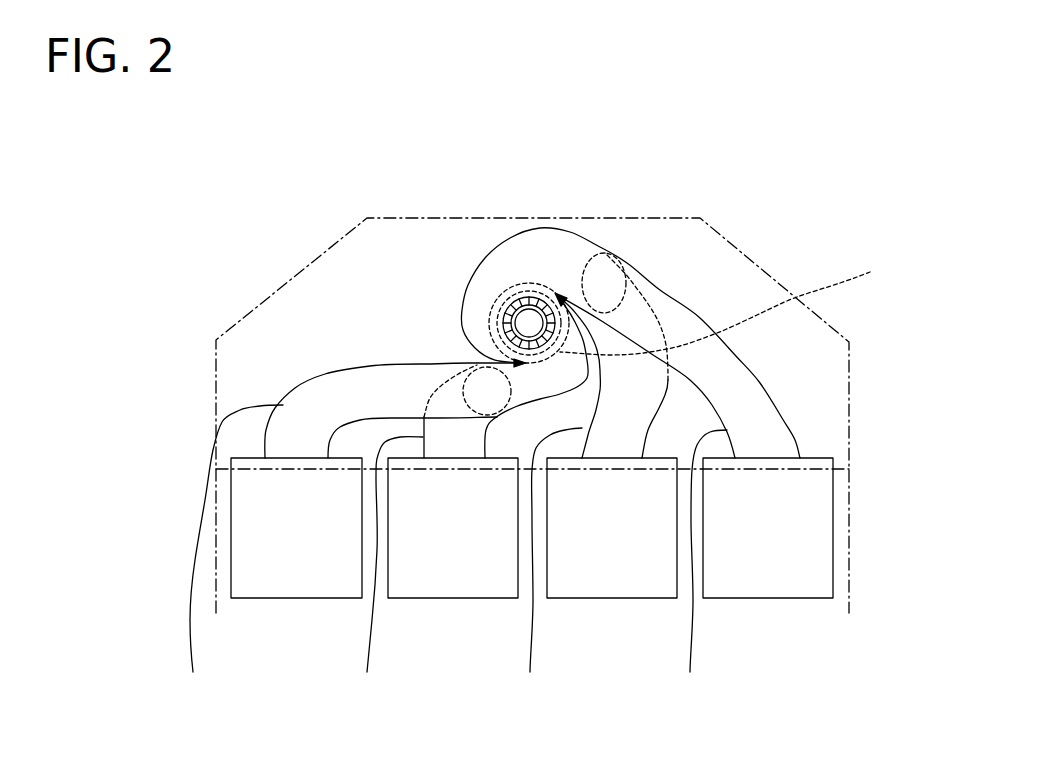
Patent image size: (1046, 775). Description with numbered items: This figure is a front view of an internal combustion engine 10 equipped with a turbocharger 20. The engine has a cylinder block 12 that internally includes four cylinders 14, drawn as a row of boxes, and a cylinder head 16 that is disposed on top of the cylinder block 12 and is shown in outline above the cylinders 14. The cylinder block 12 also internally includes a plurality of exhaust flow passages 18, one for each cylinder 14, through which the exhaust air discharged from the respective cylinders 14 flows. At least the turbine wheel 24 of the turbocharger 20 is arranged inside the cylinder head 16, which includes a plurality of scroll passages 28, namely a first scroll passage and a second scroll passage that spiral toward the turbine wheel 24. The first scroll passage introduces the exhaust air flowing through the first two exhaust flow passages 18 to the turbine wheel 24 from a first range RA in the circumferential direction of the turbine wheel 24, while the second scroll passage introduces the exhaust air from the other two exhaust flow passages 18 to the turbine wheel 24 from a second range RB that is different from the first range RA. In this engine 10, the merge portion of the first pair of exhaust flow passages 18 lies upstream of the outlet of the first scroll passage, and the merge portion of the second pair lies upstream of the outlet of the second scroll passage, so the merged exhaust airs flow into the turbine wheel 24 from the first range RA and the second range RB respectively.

The internal combustion engine 10 is at (390, 133).
The cylinder block 12 is at (850, 548).
The cylinders 14 is at (253, 587).
The cylinder head 16 is at (757, 264).
The exhaust flow passages 18 is at (468, 556).
The turbocharger 20 is at (614, 311).
The turbine wheel 24 is at (500, 323).
The scroll passages 28 is at (565, 230).
The first range RA is at (731, 307).
The second range RB is at (500, 280).